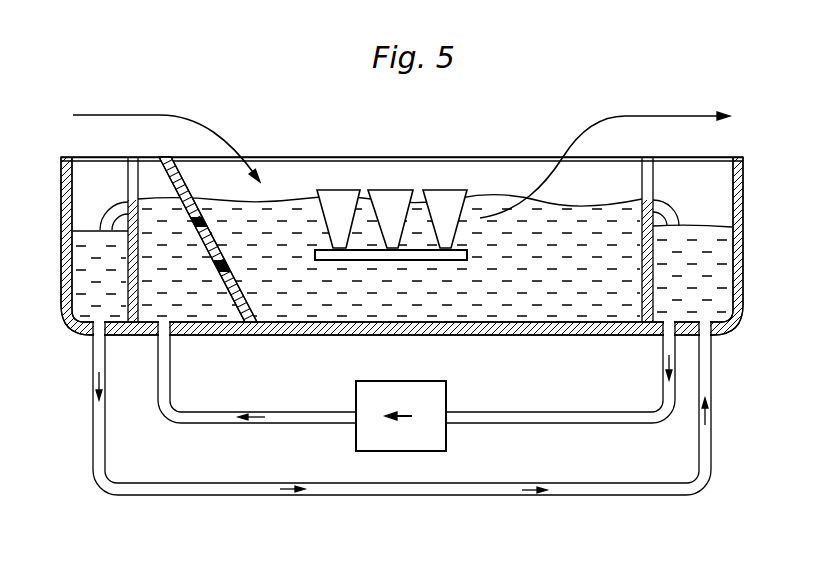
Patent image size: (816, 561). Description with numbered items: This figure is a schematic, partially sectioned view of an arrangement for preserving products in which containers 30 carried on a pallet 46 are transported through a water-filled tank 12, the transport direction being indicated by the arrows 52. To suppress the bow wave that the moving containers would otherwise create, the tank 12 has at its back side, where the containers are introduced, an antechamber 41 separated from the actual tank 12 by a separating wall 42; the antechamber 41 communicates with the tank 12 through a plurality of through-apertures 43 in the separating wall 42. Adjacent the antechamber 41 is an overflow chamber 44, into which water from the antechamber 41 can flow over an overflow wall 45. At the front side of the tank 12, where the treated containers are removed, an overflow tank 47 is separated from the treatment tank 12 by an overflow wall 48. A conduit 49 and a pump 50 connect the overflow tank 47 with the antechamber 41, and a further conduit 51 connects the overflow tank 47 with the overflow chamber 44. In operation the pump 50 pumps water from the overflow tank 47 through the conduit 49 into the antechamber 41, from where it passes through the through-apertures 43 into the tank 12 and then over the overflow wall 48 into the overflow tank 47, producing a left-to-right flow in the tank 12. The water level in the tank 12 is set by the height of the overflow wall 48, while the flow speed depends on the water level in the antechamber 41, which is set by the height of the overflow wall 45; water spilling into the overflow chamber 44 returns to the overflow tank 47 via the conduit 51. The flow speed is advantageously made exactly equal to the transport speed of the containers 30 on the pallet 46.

The tank 12 is at (500, 292).
The containers 30 is at (458, 190).
The antechamber 41 is at (173, 213).
The separating wall 42 is at (180, 162).
The through-apertures 43 is at (207, 225).
The overflow chamber 44 is at (84, 273).
The overflow wall 45 is at (117, 207).
The pallet 46 is at (445, 256).
The overflow tank 47 is at (712, 244).
The overflow wall 48 is at (640, 212).
The conduit 49 is at (533, 411).
The pump 50 is at (398, 386).
The further conduit 51 is at (250, 494).
The arrows 52 is at (637, 98).